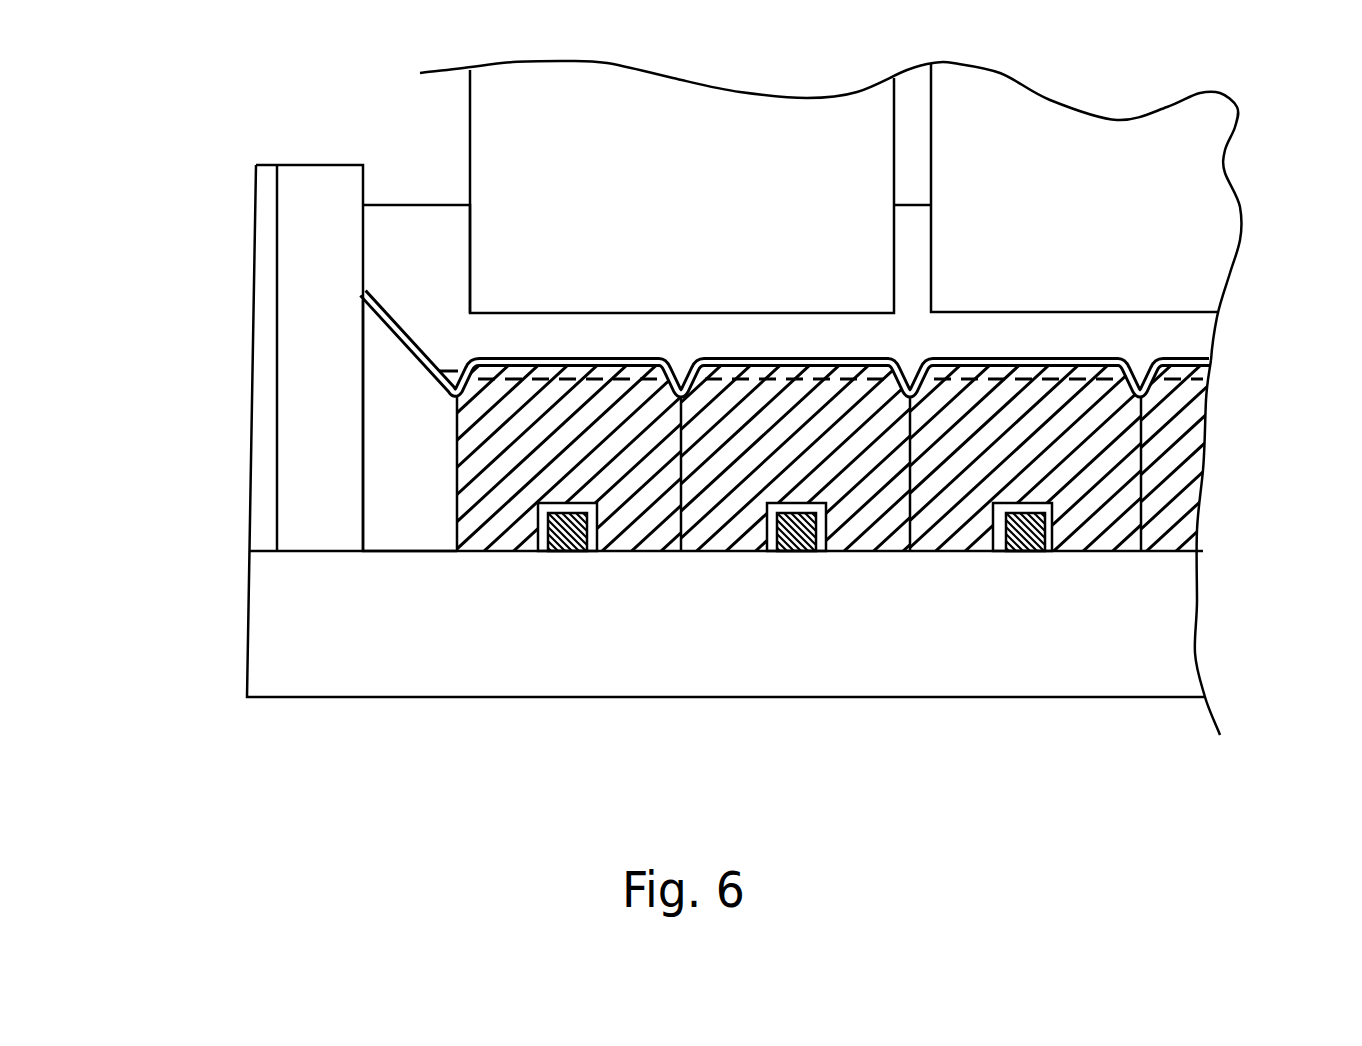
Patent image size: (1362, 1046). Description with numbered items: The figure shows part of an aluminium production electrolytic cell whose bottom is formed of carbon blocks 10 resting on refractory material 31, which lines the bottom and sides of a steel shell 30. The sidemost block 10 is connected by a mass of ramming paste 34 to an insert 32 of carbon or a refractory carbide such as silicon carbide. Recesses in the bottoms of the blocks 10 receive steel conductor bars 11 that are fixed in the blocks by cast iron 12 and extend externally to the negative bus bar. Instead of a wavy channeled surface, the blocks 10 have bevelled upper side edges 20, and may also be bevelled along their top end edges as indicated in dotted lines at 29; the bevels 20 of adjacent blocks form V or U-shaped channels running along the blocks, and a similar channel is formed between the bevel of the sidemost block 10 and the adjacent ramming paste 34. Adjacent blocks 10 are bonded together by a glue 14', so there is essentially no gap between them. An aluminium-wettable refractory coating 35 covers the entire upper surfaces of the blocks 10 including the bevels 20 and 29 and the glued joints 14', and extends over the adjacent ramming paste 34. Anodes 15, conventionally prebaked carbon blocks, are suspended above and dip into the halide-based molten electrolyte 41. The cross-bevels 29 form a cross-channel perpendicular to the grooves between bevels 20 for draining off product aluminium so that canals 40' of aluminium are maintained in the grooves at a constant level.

The carbon block 10 is at (470, 548).
The steel conductor bar 11 is at (563, 548).
The cast iron 12 is at (533, 548).
The glue 14' is at (745, 637).
The anode 15 is at (507, 145).
The bevelled upper side edge 20 is at (472, 362).
The cross-bevel 29 is at (585, 378).
The steel shell 30 is at (250, 448).
The refractory material 31 is at (263, 528).
The insert 32 is at (326, 217).
The ramming paste 34 is at (413, 447).
The aluminium-wettable refractory coating 35 is at (363, 297).
The canal of aluminium 40' is at (968, 403).
The molten electrolyte 41 is at (417, 233).